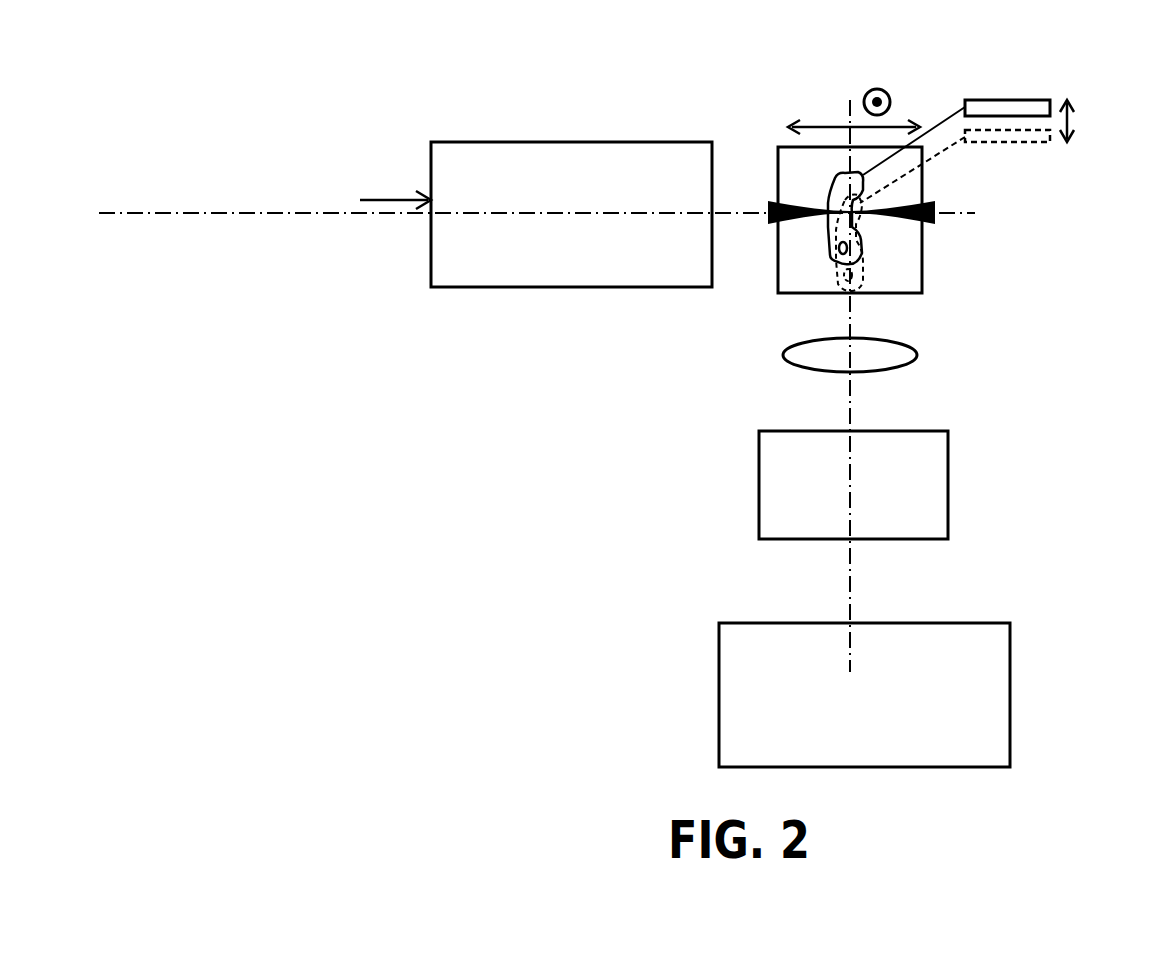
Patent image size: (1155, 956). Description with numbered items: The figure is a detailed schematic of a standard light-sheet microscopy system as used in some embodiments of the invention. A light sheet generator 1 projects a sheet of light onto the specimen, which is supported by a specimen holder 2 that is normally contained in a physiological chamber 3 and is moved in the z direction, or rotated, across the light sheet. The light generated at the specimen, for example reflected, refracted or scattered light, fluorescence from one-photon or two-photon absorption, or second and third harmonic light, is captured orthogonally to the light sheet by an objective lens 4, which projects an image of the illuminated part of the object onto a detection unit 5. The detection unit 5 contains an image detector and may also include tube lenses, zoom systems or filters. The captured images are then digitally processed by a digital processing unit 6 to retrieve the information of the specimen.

The light sheet generator 1 is at (532, 250).
The specimen holder 2 is at (987, 107).
The physiological chamber 3 is at (900, 275).
The objective lens 4 is at (880, 358).
The detection unit 5 is at (922, 500).
The digital processing unit 6 is at (997, 723).